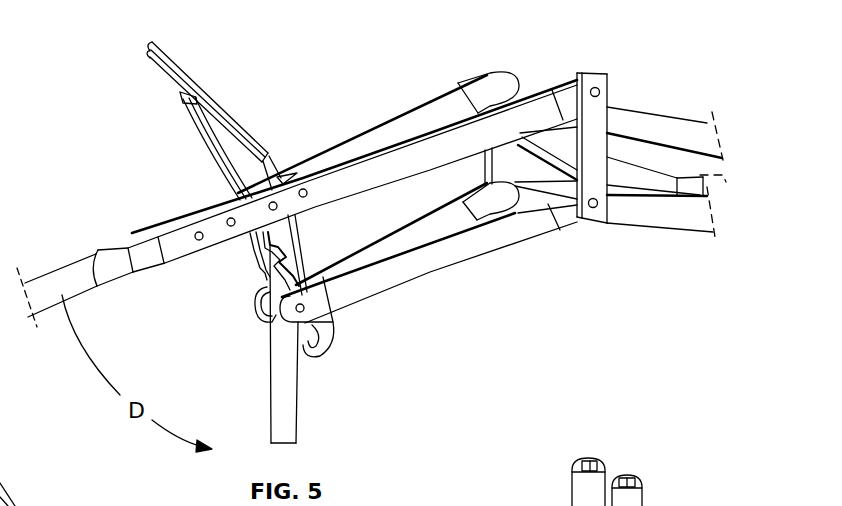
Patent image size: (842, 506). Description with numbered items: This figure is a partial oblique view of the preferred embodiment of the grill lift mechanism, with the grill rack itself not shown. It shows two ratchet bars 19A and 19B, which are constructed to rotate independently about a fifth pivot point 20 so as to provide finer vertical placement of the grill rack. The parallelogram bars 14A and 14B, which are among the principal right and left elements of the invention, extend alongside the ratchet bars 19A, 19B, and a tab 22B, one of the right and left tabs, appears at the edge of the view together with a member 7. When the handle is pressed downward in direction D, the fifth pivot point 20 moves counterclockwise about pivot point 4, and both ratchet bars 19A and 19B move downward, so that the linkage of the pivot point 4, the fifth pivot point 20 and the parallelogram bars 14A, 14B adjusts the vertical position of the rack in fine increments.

The tube member 7 is at (63, 287).
The fifth pivot point 20 is at (270, 204).
The pivot point 4 is at (304, 188).
The ratchet bar 19A is at (279, 289).
The ratchet bar 19B is at (262, 255).
The parallelogram bar 14A is at (384, 276).
The parallelogram bar 14B is at (424, 231).
The tab 22B is at (7, 487).